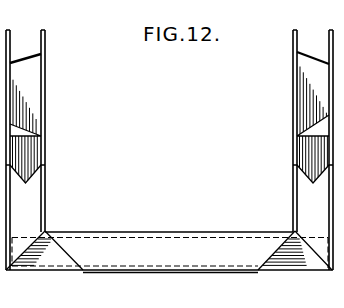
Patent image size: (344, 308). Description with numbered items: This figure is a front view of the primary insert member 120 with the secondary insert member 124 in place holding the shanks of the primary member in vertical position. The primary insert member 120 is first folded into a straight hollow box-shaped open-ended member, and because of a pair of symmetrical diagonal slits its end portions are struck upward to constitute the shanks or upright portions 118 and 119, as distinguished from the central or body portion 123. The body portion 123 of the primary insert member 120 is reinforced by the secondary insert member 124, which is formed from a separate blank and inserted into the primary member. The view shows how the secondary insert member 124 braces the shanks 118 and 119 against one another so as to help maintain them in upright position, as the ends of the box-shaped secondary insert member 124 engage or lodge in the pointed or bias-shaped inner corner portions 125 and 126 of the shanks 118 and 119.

The shank 118 is at (46, 88).
The shank 119 is at (295, 90).
The primary insert member 120 is at (135, 231).
The body portion 123 is at (198, 242).
The secondary insert member 124 is at (63, 261).
The inner corner portion 125 is at (21, 243).
The inner corner portion 126 is at (297, 260).